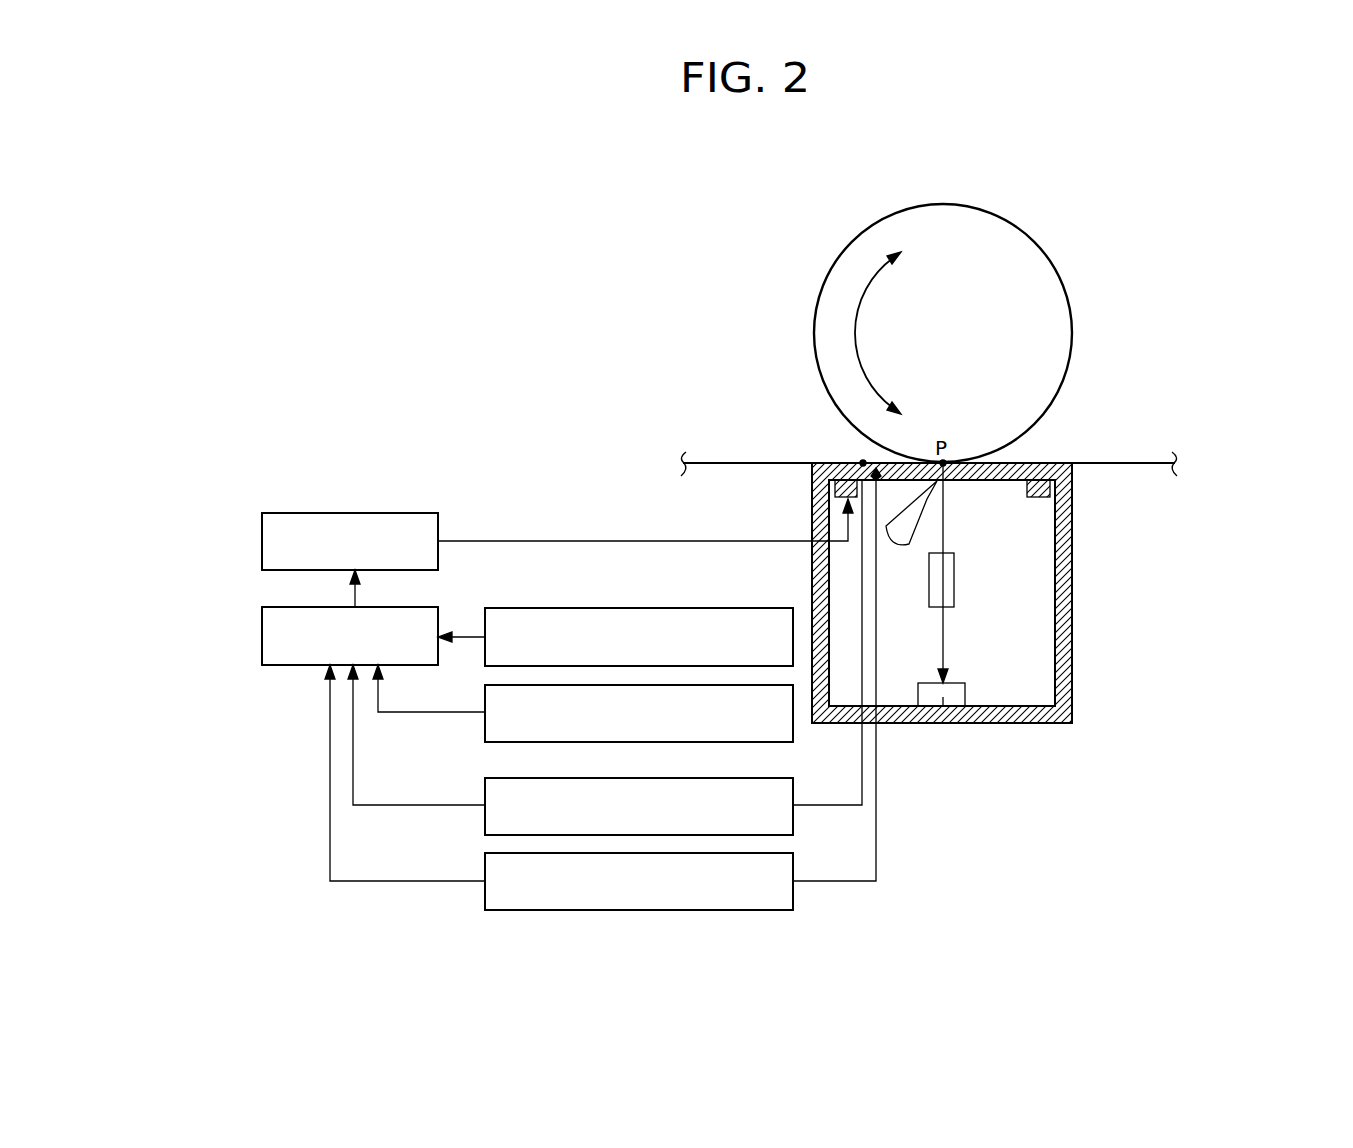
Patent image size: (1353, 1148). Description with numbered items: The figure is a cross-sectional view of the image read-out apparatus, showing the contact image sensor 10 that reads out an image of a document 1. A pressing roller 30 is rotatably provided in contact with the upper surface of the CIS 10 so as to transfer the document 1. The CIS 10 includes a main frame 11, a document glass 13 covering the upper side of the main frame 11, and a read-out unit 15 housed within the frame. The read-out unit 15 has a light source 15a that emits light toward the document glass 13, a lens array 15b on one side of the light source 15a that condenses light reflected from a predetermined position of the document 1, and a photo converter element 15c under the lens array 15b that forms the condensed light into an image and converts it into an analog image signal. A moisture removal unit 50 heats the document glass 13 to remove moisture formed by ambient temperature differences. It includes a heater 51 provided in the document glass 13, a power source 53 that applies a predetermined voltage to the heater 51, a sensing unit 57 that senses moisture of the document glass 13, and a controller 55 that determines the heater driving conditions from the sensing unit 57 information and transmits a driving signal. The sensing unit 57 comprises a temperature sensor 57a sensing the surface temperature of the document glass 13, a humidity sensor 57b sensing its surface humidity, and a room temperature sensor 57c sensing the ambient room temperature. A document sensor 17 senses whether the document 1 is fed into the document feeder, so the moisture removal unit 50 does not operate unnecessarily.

The document 1 is at (1127, 463).
The contact image sensor 10 is at (1128, 688).
The main frame 11 is at (1073, 633).
The document glass 13 is at (1047, 462).
The read-out unit 15 is at (979, 643).
The light source 15a is at (898, 540).
The lens array 15b is at (954, 578).
The photo converter element 15c is at (961, 622).
The document sensor 17 is at (566, 608).
The pressing roller 30 is at (1049, 266).
The moisture removal unit 50 is at (192, 518).
The heater 51 is at (815, 462).
The power source 53 is at (262, 537).
The controller 55 is at (262, 634).
The sensing unit 57 is at (238, 710).
The temperature sensor 57a is at (485, 906).
The humidity sensor 57b is at (485, 830).
The room temperature sensor 57c is at (485, 739).